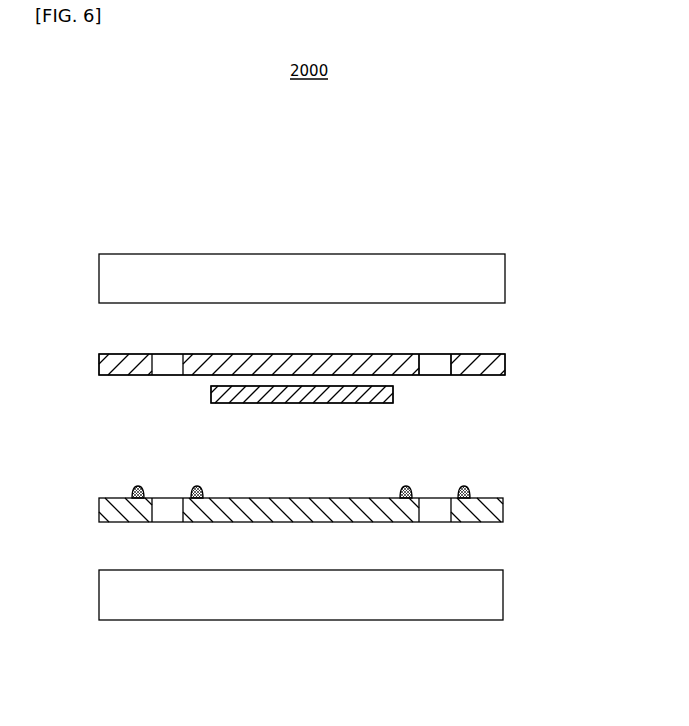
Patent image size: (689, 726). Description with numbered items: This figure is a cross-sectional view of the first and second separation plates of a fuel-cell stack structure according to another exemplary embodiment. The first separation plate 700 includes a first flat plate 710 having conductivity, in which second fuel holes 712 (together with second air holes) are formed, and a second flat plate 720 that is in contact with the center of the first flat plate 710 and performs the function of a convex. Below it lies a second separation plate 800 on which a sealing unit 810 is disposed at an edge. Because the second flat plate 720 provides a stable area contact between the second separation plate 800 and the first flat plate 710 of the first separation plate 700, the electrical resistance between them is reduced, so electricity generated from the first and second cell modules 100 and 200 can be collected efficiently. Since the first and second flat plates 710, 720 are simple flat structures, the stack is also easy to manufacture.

The first cell module 100 is at (296, 254).
The second cell module 200 is at (293, 621).
The first separation plate 700 is at (188, 398).
The first flat plate 710 is at (122, 352).
The second fuel hole 712 is at (435, 366).
The second flat plate 720 is at (393, 394).
The second separation plate 800 is at (126, 508).
The sealing unit 810 is at (135, 490).